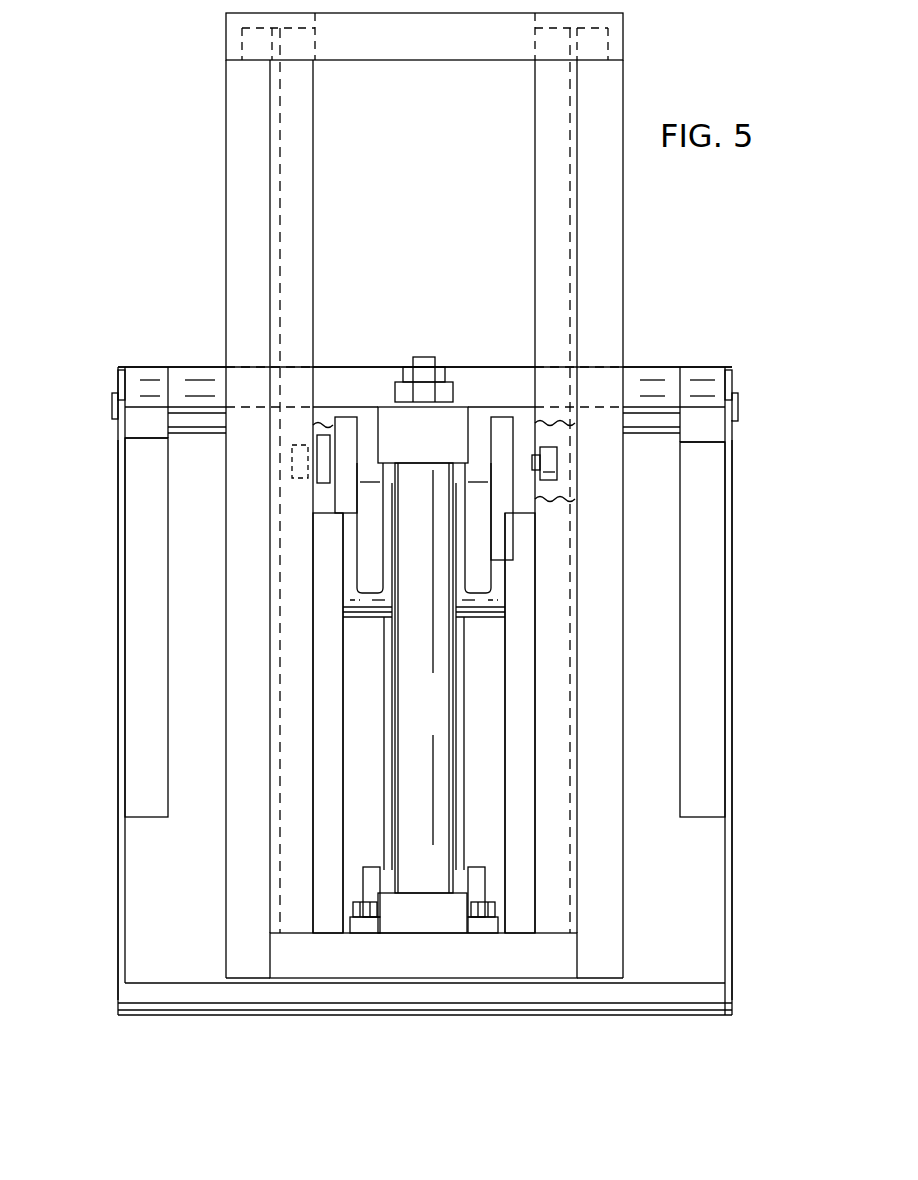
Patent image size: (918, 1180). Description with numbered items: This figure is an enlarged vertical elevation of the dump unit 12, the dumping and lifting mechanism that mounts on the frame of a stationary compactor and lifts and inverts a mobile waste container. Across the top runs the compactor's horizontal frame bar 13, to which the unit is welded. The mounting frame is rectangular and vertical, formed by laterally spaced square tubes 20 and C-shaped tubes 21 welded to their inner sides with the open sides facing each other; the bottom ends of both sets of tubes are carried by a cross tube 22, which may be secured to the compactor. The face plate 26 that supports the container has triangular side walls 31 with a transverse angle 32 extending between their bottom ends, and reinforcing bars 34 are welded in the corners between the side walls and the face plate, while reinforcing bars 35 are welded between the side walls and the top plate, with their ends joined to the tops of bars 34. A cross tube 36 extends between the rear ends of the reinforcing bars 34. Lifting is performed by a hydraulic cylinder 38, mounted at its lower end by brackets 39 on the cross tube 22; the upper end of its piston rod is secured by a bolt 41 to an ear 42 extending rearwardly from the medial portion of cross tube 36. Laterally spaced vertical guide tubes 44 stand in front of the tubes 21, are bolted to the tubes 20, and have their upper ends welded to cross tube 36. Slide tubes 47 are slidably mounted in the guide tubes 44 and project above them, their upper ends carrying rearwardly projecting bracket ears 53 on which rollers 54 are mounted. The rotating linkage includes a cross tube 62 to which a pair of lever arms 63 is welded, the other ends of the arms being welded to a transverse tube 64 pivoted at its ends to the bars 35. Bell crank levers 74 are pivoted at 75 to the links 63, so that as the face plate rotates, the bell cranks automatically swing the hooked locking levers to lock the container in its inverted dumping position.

The dump unit 12 is at (660, 343).
The horizontal frame bar 13 is at (408, 48).
The square tubes 20 is at (228, 250).
The C-shaped tubes 21 is at (313, 256).
The cross tube 22 is at (433, 980).
The face plate 26 is at (700, 877).
The side walls 31 is at (110, 722).
The transverse angle 32 is at (595, 1003).
The reinforcing bars 34 is at (140, 607).
The reinforcing bars 35 is at (115, 383).
The cross tube 36 is at (362, 368).
The hydraulic cylinder 38 is at (407, 718).
The brackets 39 is at (368, 930).
The bolt 41 is at (440, 366).
The ear 42 is at (396, 382).
The guide tubes 44 is at (522, 752).
The slide tubes 47 is at (525, 505).
The bracket ears 53 is at (332, 437).
The rollers 54 is at (290, 470).
The cross tube 62 is at (480, 615).
The lever arms 63 is at (368, 440).
The transverse tube 64 is at (200, 425).
The bell crank levers 74 is at (380, 735).
The pivot 75 is at (385, 497).